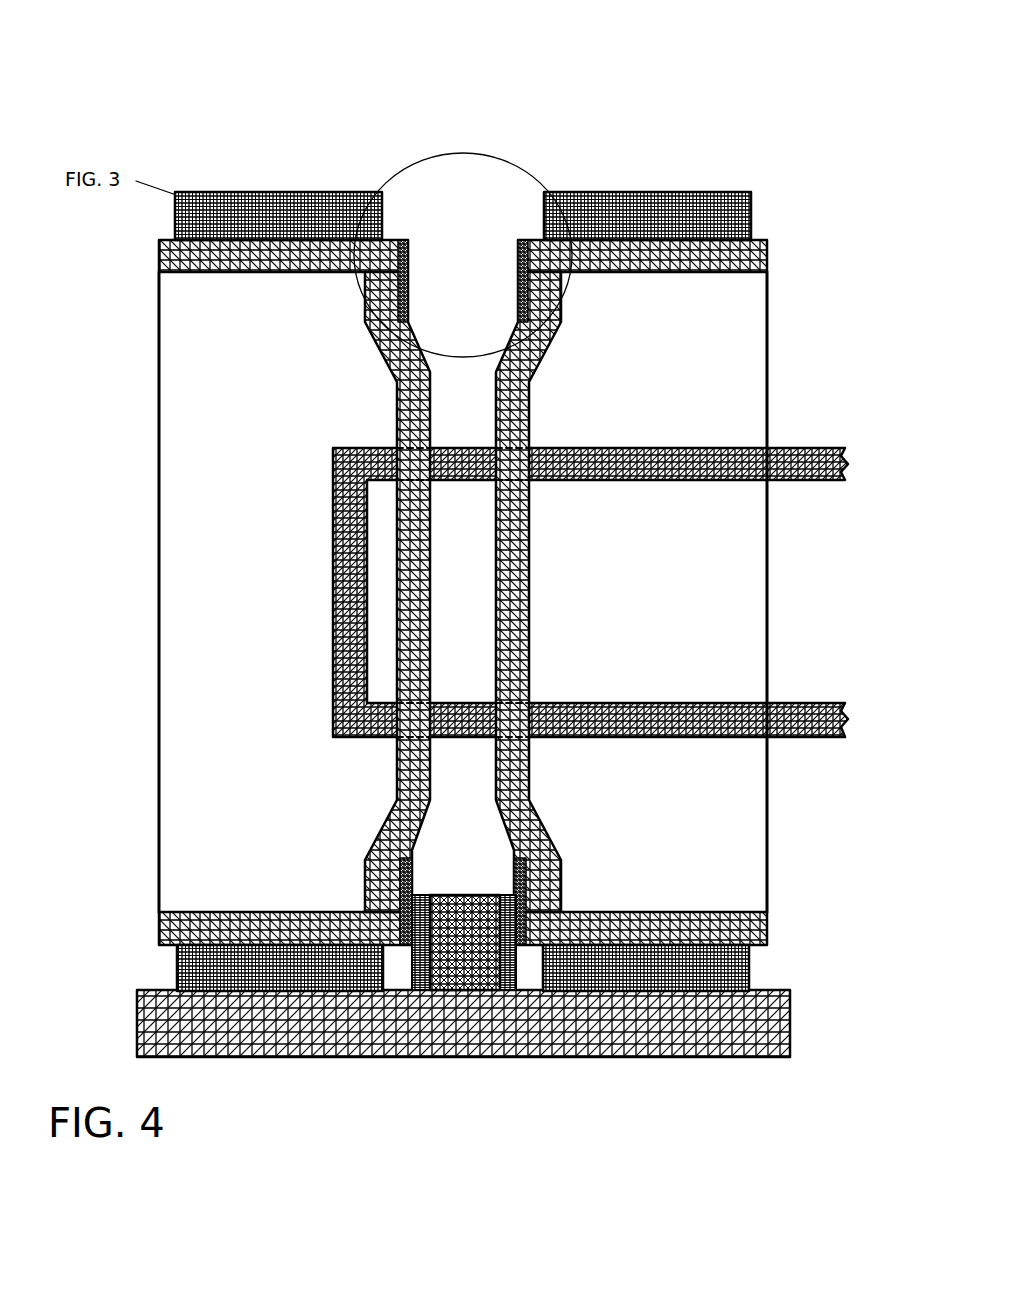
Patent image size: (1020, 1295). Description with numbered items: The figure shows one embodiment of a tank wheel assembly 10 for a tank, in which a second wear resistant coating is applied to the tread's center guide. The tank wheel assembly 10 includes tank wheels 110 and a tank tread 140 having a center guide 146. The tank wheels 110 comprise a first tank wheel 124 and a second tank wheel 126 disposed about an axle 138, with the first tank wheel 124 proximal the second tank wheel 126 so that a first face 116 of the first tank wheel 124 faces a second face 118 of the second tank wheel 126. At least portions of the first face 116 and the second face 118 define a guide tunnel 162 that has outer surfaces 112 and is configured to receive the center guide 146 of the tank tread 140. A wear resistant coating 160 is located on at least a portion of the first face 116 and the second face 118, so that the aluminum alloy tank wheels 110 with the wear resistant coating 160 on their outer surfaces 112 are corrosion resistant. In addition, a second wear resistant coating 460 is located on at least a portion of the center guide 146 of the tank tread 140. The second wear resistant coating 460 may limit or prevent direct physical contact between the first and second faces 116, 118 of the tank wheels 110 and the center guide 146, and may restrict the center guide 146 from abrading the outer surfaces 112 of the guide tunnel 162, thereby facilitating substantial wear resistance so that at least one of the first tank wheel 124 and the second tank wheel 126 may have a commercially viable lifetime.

The tank wheel assembly 10 is at (785, 61).
The tank wheels 110 is at (589, 178).
The outer surfaces 112 is at (374, 256).
The first face 116 is at (415, 412).
The second face 118 is at (511, 412).
The first tank wheel 124 is at (146, 300).
The second tank wheel 126 is at (784, 300).
The axle 138 is at (333, 667).
The tank tread 140 is at (160, 1027).
The center guide 146 is at (467, 962).
The wear resistant coating 160 is at (398, 262).
The guide tunnel 162 is at (445, 290).
The second wear resistant coating 460 is at (422, 965).